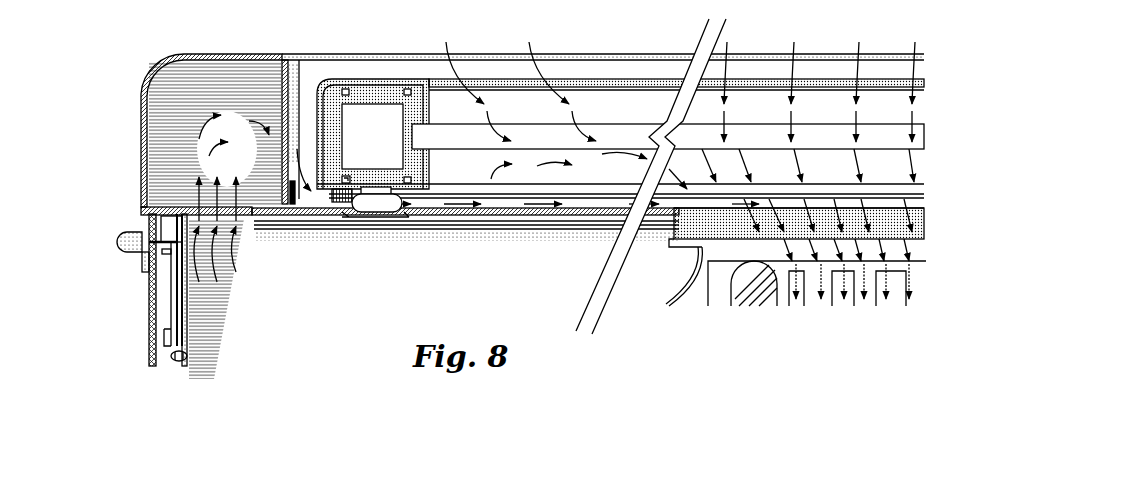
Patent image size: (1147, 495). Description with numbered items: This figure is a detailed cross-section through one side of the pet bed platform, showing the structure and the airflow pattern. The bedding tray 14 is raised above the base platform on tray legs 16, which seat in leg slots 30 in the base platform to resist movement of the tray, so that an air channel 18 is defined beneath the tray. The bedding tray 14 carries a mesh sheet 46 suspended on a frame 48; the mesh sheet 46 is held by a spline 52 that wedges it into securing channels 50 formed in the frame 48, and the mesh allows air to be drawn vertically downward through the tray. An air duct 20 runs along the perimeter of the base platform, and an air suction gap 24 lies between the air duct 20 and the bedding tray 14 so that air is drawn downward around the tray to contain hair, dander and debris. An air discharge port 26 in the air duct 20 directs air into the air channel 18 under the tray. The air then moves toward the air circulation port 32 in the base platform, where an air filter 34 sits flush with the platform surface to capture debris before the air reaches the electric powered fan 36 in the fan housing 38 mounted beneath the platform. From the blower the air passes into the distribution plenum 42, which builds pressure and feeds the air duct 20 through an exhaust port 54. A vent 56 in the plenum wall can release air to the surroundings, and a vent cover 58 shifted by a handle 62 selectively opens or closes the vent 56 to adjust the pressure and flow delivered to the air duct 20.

The bedding tray 14 is at (383, 82).
The tray legs 16 is at (382, 210).
The air channel 18 is at (552, 203).
The air duct 20 is at (180, 58).
The air suction gap 24 is at (305, 78).
The air discharge port 26 is at (282, 202).
The leg slots 30 is at (357, 222).
The air circulation port 32 is at (926, 210).
The air filter 34 is at (926, 231).
The electric powered fan 36 is at (868, 306).
The fan housing 38 is at (697, 260).
The distribution plenum 42 is at (218, 370).
The mesh sheet 46 is at (606, 82).
The frame 48 is at (655, 106).
The securing channels 50 is at (344, 178).
The spline 52 is at (351, 181).
The exhaust port 54 is at (232, 213).
The vent 56 is at (185, 285).
The vent cover 58 is at (178, 301).
The handle 62 is at (142, 245).